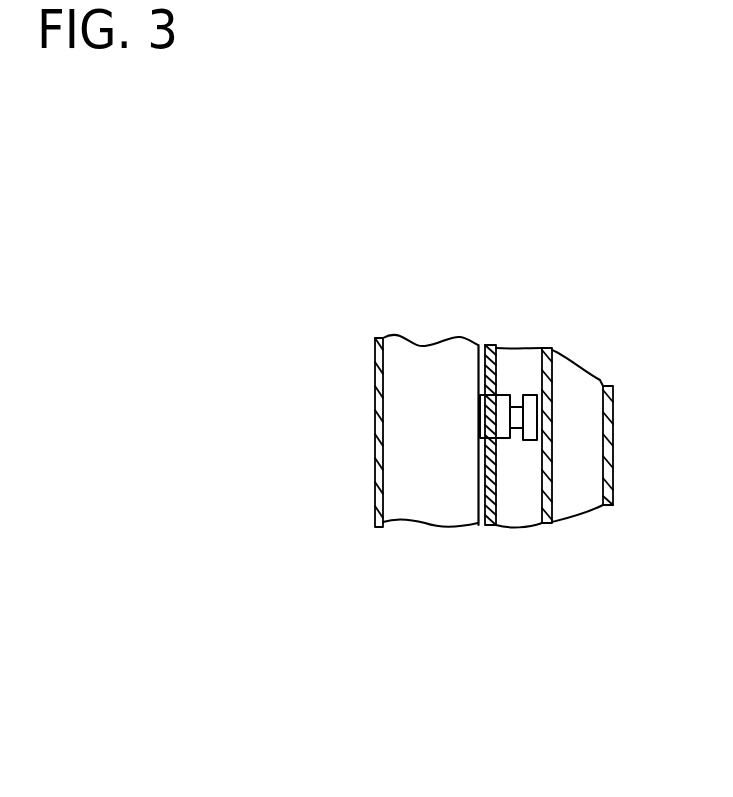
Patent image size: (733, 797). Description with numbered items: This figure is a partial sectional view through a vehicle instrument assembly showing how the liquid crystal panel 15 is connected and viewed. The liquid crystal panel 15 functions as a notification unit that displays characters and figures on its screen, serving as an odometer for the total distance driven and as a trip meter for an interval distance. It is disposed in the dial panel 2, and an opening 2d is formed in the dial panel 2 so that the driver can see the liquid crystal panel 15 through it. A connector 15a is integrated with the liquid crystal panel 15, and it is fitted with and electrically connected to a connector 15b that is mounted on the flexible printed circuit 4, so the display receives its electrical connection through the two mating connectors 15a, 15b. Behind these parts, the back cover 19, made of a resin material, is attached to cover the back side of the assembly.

The dial panel 2 is at (478, 483).
The opening 2d is at (477, 428).
The flexible printed circuit 4 is at (552, 384).
The liquid crystal panel 15 is at (482, 309).
The connector 15a is at (514, 400).
The connector 15b is at (531, 394).
The back cover 19 is at (613, 418).